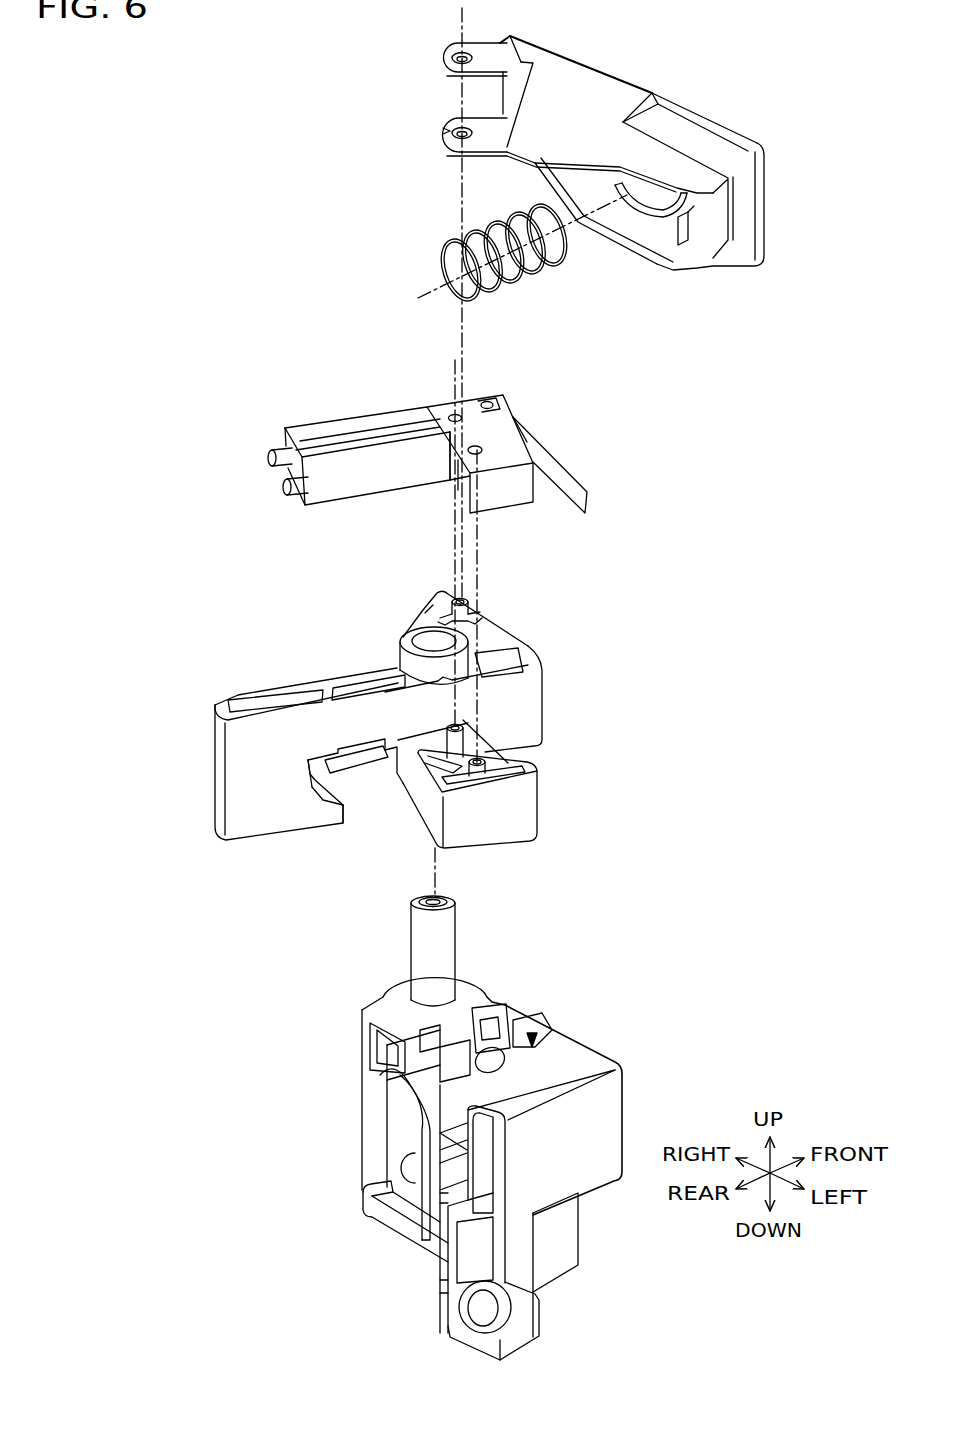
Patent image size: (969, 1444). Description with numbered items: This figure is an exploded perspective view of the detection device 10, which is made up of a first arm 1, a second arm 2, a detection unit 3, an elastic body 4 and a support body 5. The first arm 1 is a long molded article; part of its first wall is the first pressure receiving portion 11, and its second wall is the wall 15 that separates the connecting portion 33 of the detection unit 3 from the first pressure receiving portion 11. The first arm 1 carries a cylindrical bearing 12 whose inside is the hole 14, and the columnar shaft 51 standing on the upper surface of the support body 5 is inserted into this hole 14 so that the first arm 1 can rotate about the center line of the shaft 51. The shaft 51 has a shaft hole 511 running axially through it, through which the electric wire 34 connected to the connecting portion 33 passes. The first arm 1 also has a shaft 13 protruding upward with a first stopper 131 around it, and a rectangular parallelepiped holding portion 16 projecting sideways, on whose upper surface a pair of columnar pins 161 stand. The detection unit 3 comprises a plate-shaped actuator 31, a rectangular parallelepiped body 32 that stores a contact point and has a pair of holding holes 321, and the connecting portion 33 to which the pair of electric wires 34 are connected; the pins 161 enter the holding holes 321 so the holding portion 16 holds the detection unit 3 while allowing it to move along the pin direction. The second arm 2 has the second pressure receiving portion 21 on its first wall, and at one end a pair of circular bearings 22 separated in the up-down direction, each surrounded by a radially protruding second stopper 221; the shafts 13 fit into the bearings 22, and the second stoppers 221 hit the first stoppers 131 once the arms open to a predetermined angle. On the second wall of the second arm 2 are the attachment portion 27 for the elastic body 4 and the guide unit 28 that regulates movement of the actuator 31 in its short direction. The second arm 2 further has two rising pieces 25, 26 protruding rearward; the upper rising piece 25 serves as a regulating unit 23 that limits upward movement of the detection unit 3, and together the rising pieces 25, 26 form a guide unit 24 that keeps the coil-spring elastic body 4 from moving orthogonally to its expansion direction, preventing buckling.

The detection device 10 is at (185, 132).
The first arm 1 is at (222, 698).
The first pressure receiving portion 11 is at (273, 692).
The bearing 12 is at (398, 657).
The shaft 13 is at (468, 603).
The first stopper 131 is at (442, 594).
The hole 14 is at (422, 638).
The wall 15 is at (262, 823).
The holding portion 16 is at (486, 735).
The pin 161 is at (448, 730).
The second arm 2 is at (768, 222).
The second pressure receiving portion 21 is at (713, 123).
The bearing 22 is at (446, 58).
The second stopper 221 is at (449, 51).
The regulating unit 23 is at (511, 130).
The guide unit 24 is at (538, 176).
The rising piece 25 is at (523, 143).
The rising piece 26 is at (697, 250).
The attachment portion 27 is at (647, 203).
The guide unit 28 is at (683, 237).
The detection unit 3 is at (532, 447).
The actuator 31 is at (587, 503).
The body 32 is at (507, 422).
The holding hole 321 is at (453, 416).
The connecting portion 33 is at (340, 493).
The electric wire 34 is at (270, 456).
The elastic body 4 is at (553, 267).
The support body 5 is at (589, 1051).
The shaft 51 is at (450, 955).
The shaft hole 511 is at (440, 896).